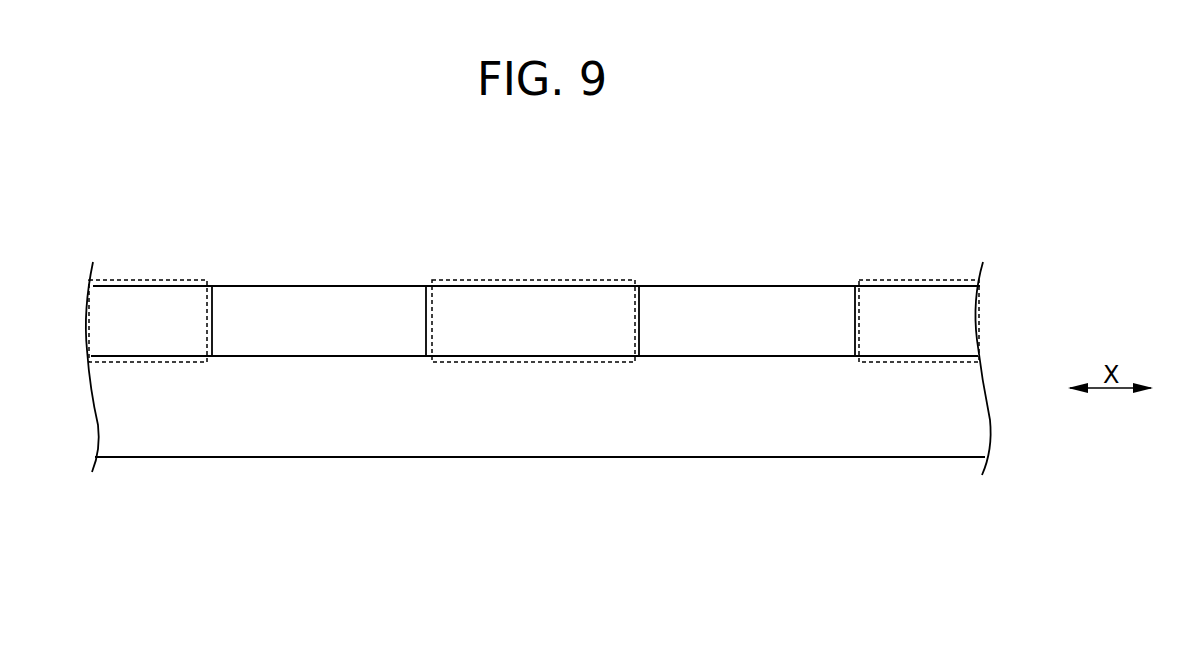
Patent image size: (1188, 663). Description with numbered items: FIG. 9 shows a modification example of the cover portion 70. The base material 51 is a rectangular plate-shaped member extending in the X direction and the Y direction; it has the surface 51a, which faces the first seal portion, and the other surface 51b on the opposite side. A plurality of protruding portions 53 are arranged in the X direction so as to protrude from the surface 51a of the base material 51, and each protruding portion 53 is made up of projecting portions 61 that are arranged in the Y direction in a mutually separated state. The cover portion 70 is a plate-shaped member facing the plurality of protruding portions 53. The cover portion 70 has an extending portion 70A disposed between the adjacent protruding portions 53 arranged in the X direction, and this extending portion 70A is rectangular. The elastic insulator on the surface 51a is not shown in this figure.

The base material 51 is at (593, 398).
The surface 51a is at (957, 355).
The other surface 51b is at (542, 458).
The protruding portion 53 is at (536, 262).
The projecting portion 61 is at (253, 280).
The cover portion 70 is at (526, 280).
The extending portion 70A is at (163, 280).